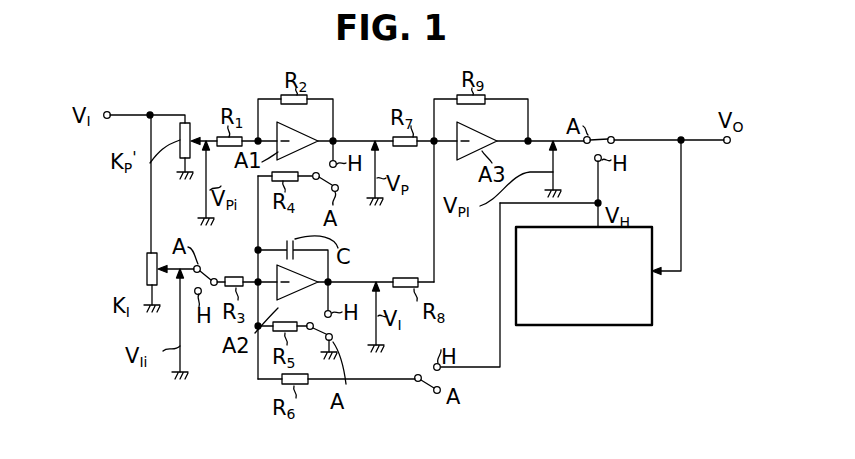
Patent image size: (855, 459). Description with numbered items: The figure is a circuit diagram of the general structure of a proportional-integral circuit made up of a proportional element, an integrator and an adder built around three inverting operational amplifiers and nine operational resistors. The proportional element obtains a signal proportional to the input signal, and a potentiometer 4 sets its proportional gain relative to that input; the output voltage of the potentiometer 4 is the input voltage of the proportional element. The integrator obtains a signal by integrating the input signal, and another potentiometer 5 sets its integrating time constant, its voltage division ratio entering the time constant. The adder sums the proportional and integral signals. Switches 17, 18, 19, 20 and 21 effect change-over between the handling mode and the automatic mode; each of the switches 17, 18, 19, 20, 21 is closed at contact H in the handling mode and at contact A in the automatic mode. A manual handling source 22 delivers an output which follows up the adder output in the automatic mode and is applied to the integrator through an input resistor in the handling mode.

The potentiometer 4 is at (198, 123).
The potentiometer 5 is at (147, 266).
The switch 17 is at (208, 276).
The switch 18 is at (336, 178).
The switch 19 is at (331, 321).
The switch 20 is at (428, 384).
The switch 21 is at (602, 136).
The manual handling source 22 is at (652, 305).